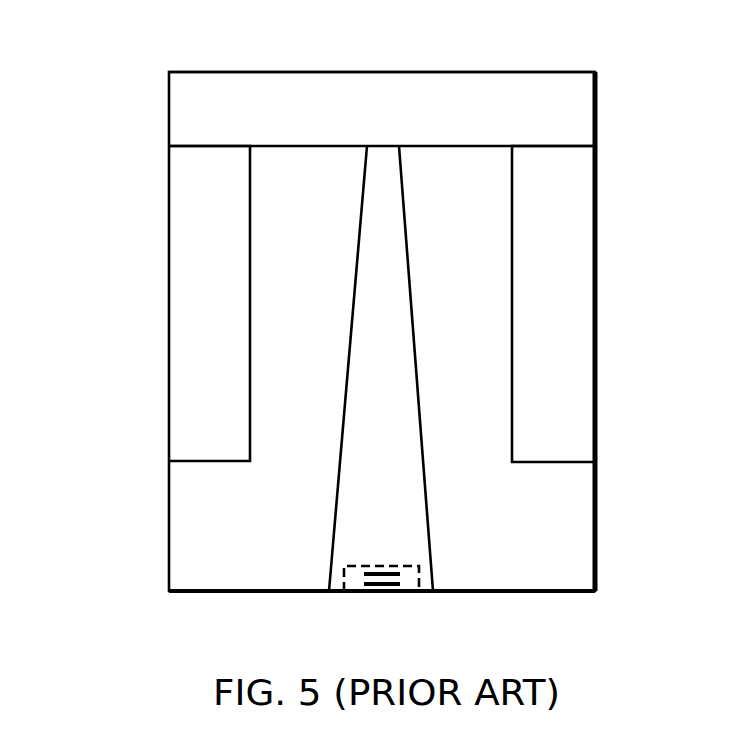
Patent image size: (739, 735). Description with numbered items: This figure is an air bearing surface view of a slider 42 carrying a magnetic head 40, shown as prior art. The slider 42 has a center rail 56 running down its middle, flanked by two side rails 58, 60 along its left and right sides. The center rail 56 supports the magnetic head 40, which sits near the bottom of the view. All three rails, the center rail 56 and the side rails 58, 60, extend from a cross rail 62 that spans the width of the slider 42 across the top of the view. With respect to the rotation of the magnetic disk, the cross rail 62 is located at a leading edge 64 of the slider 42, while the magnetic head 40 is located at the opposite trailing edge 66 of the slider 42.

The magnetic head 40 is at (354, 596).
The slider 42 is at (140, 541).
The center rail 56 is at (370, 253).
The side rail 58 is at (183, 213).
The side rail 60 is at (569, 216).
The cross rail 62 is at (298, 80).
The leading edge 64 is at (448, 72).
The trailing edge 66 is at (495, 596).